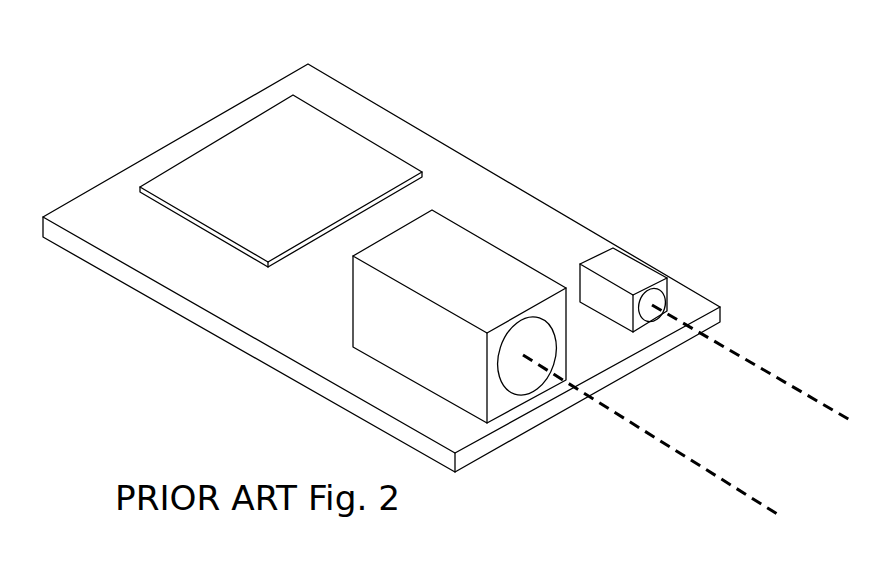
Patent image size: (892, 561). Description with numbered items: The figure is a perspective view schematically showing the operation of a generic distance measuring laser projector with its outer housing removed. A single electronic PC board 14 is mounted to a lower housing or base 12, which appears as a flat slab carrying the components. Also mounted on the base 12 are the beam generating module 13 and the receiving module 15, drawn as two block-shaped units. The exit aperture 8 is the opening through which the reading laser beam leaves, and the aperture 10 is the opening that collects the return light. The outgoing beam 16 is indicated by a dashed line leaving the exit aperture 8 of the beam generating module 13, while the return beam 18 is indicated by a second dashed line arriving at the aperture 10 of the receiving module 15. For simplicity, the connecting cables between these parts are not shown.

The exit aperture 8 is at (665, 297).
The aperture 10 is at (527, 388).
The lower housing or base 12 is at (412, 122).
The beam generating module 13 is at (640, 261).
The electronic PC board 14 is at (362, 158).
The receiving module 15 is at (498, 248).
The outgoing beam 16 is at (752, 362).
The return beam 18 is at (723, 477).